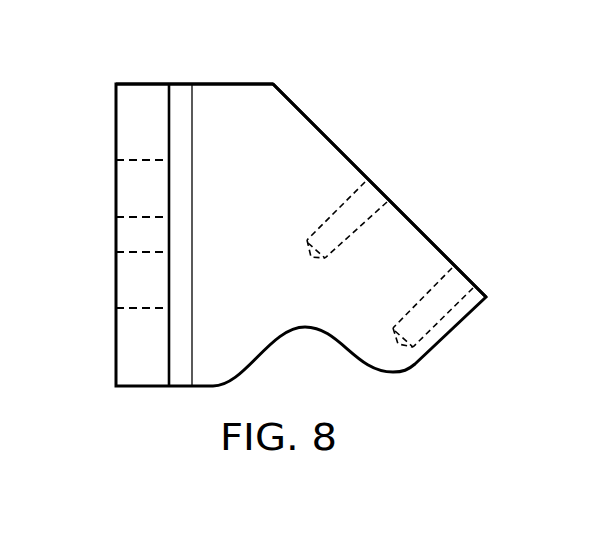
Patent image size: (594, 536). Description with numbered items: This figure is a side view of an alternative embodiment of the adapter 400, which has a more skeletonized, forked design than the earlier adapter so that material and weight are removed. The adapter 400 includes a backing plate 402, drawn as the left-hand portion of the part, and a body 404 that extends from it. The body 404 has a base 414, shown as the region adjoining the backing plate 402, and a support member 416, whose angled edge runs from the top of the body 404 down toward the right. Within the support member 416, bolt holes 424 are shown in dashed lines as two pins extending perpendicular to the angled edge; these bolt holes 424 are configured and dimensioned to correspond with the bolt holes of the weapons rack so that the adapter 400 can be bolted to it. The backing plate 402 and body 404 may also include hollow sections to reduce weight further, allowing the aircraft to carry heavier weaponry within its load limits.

The adapter 400 is at (463, 128).
The backing plate 402 is at (115, 122).
The body 404 is at (247, 83).
The base 414 is at (208, 98).
The support member 416 is at (339, 146).
The bolt holes 424 is at (340, 228).